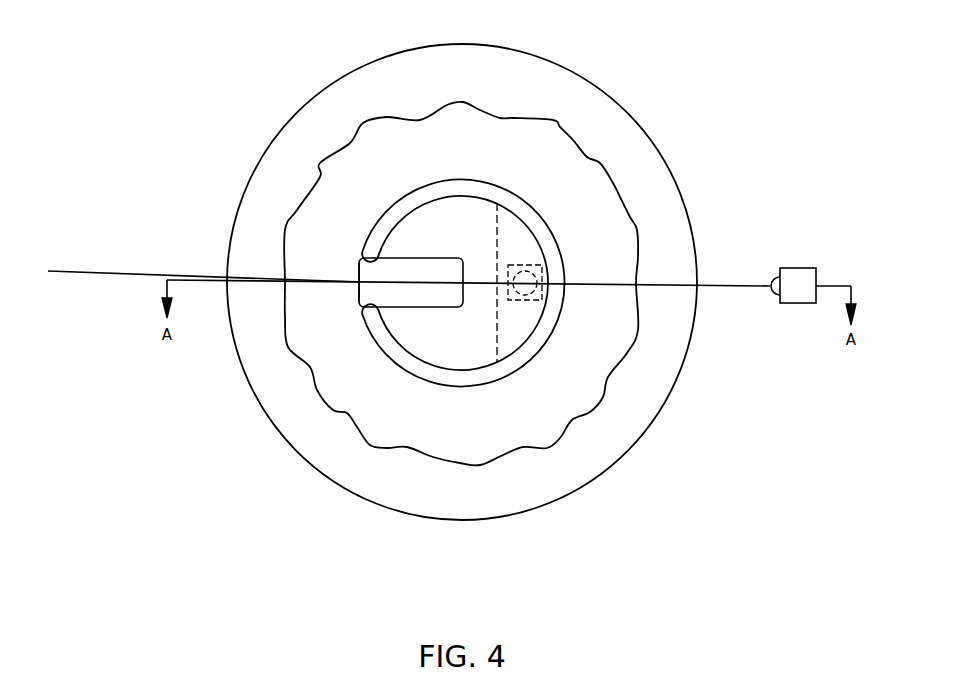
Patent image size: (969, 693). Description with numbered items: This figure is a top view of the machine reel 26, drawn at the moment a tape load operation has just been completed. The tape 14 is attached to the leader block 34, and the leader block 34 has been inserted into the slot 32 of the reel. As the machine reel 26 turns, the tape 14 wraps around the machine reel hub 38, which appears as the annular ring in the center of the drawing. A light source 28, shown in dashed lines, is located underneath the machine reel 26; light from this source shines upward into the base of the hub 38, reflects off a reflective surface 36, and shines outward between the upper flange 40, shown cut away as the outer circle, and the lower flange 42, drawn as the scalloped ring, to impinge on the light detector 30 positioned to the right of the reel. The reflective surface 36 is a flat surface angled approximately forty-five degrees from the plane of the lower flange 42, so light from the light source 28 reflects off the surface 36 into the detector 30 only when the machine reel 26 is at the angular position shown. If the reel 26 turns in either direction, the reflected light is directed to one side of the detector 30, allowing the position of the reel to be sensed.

The tape 14 is at (97, 271).
The machine reel 26 is at (470, 264).
The light source 28 is at (532, 263).
The light detector 30 is at (797, 268).
The slot 32 is at (358, 252).
The leader block 34 is at (427, 258).
The reflective surface 36 is at (497, 245).
The machine reel hub 38 is at (431, 181).
The upper flange 40 is at (548, 60).
The lower flange 42 is at (540, 146).